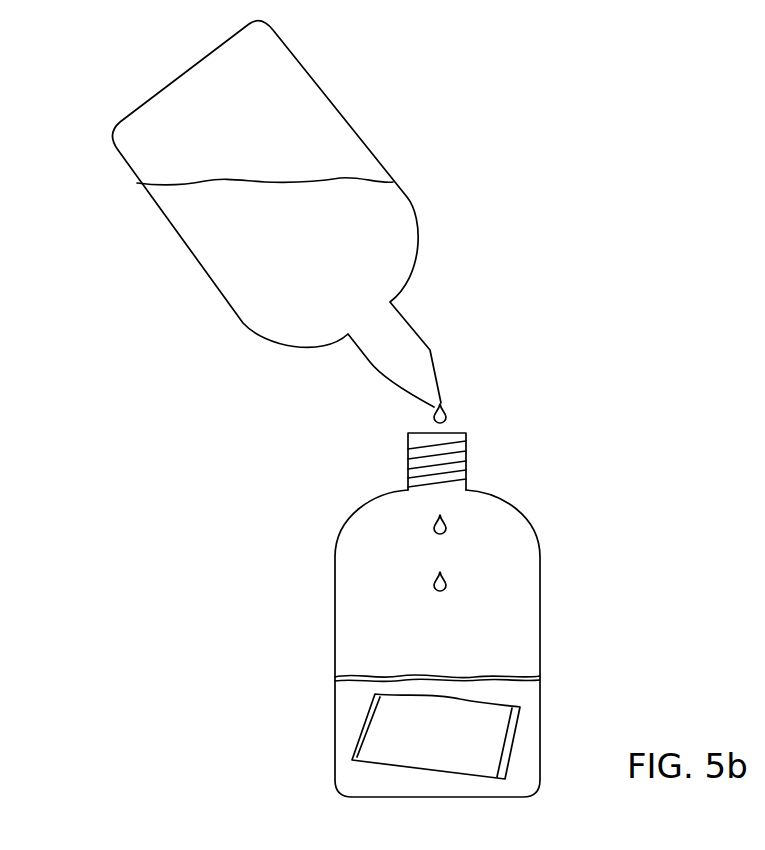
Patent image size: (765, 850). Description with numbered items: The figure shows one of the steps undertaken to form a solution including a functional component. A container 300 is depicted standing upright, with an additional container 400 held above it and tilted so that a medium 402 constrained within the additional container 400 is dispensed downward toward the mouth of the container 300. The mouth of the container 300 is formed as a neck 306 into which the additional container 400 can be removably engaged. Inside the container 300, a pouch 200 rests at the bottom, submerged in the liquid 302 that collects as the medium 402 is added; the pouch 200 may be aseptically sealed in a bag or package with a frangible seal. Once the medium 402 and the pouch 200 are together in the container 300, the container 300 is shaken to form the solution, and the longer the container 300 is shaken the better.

The dropper bottle 400 is at (418, 201).
The liquid in dropper bottle 402 is at (205, 245).
The container 300 is at (320, 631).
The liquid in container 302 is at (505, 610).
The threaded neck 306 is at (465, 458).
The pouch 200 is at (477, 731).